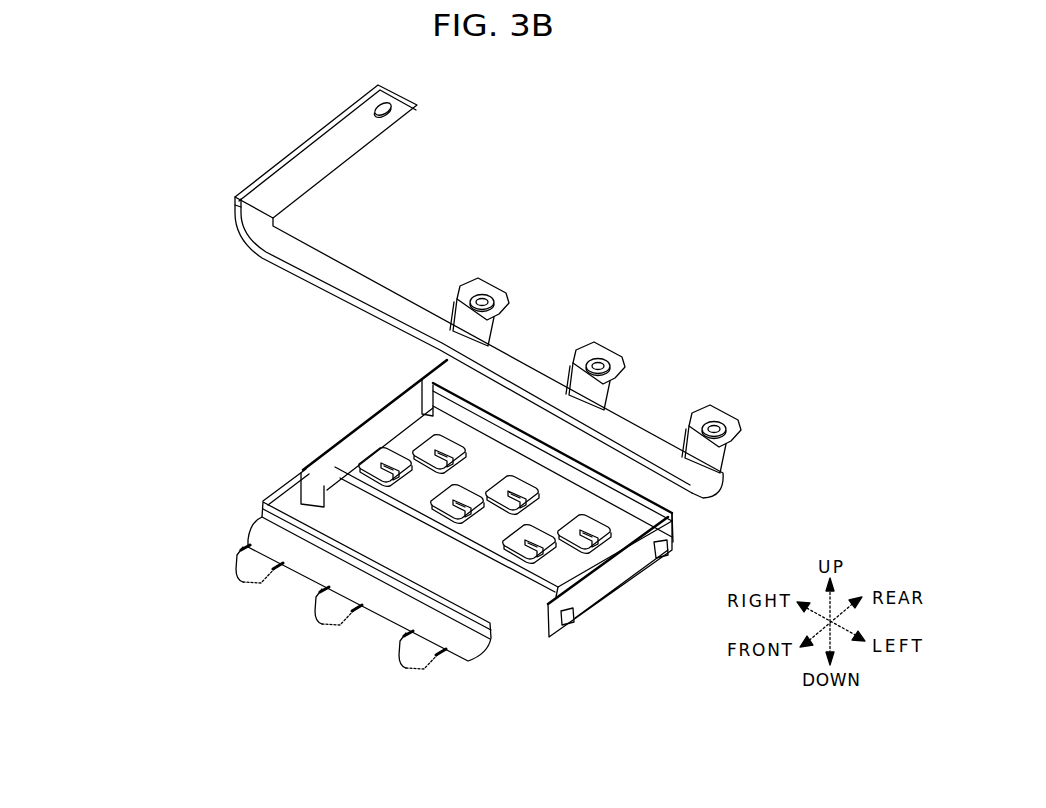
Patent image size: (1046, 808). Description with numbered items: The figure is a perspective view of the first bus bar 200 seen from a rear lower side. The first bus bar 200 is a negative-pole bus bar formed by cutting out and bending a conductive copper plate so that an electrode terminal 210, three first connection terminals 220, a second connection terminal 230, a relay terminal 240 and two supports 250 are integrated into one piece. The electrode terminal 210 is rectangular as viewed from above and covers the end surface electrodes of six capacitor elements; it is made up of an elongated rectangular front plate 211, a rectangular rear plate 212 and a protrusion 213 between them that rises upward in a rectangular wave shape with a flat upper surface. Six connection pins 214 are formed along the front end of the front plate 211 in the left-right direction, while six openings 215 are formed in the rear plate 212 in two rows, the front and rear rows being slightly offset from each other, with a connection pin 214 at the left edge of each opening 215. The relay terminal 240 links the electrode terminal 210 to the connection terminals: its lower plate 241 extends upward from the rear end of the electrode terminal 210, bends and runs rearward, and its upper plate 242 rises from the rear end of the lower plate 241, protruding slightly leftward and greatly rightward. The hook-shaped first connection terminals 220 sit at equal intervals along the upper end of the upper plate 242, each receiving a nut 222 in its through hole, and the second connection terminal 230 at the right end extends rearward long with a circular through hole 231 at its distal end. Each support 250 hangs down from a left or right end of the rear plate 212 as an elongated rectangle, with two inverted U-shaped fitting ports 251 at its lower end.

The first bus bar 200 is at (612, 261).
The electrode terminal 210 is at (493, 638).
The front plate 211 is at (258, 524).
The rear plate 212 is at (674, 529).
The protrusion 213 is at (280, 484).
The connection pin 214 is at (239, 583).
The opening 215 is at (410, 440).
The first connection terminal 220 is at (613, 357).
The nut 222 is at (582, 340).
The second connection terminal 230 is at (305, 143).
The through hole 231 is at (397, 116).
The relay terminal 240 is at (322, 266).
The lower plate 241 is at (668, 496).
The upper plate 242 is at (238, 206).
The support 250 is at (347, 450).
The fitting port 251 is at (422, 402).